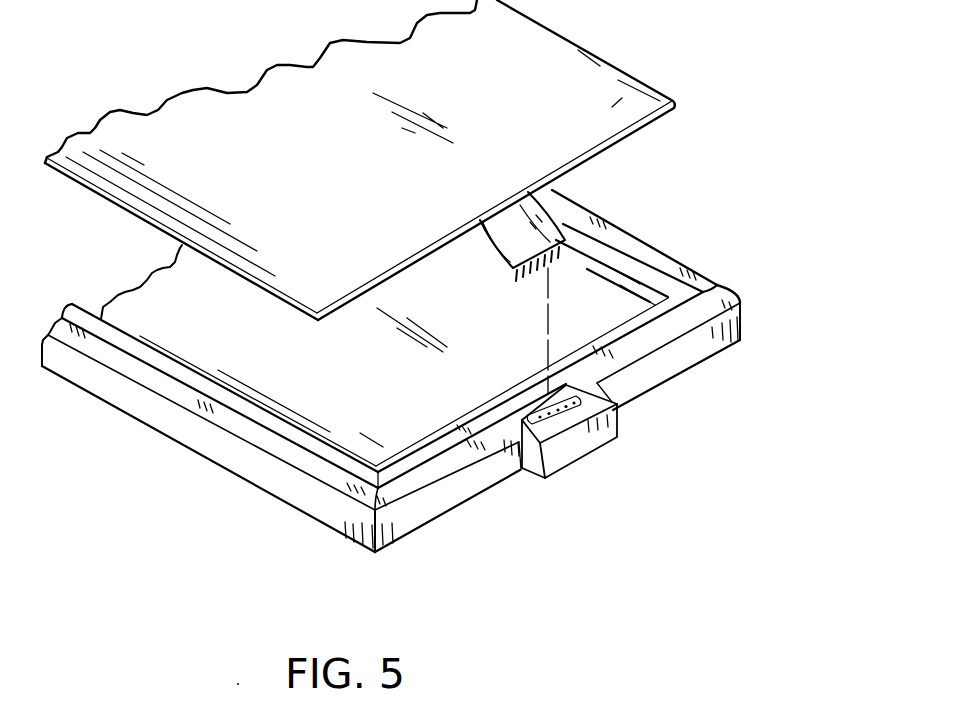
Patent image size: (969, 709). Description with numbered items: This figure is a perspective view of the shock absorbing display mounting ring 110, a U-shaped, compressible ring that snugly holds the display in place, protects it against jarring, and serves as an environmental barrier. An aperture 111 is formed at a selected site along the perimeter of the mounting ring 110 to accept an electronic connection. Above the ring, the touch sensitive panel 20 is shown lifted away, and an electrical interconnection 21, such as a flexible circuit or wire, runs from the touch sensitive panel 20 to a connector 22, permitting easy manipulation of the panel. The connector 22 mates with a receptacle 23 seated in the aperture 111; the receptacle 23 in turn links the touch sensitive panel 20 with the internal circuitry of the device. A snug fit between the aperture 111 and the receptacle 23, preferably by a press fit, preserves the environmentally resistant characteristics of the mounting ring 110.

The touch sensitive panel 20 is at (577, 74).
The electrical interconnection 21 is at (530, 220).
The connector 22 is at (558, 263).
The receptacle 23 is at (537, 425).
The mounting ring 110 is at (667, 262).
The aperture 111 is at (613, 401).